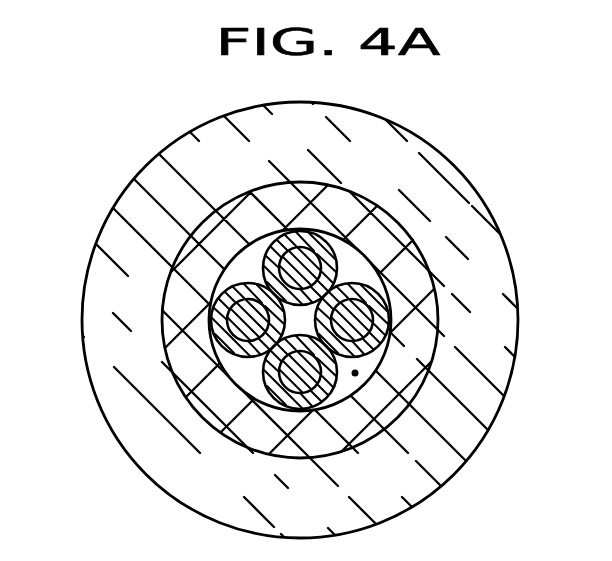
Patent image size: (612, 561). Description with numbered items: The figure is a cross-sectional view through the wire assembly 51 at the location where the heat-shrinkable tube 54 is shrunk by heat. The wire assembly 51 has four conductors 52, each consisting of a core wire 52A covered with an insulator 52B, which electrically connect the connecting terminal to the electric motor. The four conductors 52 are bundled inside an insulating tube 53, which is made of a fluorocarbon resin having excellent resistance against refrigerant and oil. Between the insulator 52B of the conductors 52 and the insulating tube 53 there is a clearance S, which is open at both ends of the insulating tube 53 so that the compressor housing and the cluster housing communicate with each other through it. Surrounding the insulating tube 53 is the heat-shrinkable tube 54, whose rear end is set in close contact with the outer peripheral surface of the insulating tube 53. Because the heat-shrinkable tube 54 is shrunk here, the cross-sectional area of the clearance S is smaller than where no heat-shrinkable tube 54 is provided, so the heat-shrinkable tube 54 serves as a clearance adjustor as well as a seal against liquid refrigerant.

The wire assembly 51 is at (194, 419).
The conductor 52 is at (301, 319).
The core wire 52A is at (193, 153).
The insulator 52B is at (272, 238).
The insulating tube 53 is at (390, 225).
The heat-shrinkable tube 54 is at (463, 173).
The clearance S is at (358, 371).